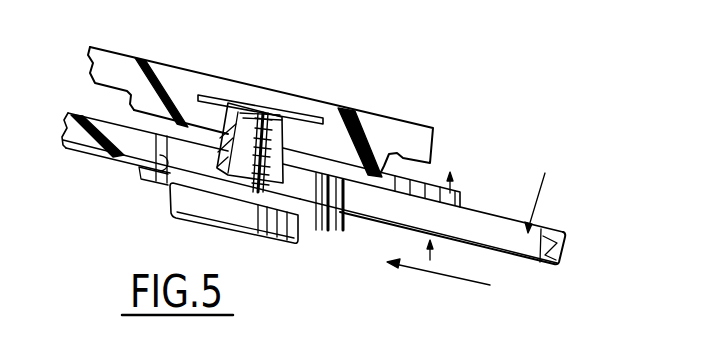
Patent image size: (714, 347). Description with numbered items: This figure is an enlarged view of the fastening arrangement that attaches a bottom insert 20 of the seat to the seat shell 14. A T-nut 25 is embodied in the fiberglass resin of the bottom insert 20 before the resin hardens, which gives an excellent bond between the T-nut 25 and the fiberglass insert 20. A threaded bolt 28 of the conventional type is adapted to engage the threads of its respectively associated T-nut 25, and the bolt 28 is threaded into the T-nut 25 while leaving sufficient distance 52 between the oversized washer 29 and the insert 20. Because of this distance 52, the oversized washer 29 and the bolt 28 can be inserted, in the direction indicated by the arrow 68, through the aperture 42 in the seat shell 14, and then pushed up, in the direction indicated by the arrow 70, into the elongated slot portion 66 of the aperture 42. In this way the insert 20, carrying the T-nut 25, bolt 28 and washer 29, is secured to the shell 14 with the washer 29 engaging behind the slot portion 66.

The seat shell 14 is at (100, 148).
The bottom insert 20 is at (370, 112).
The T-nut 25 is at (280, 117).
The threaded bolt 28 is at (275, 243).
The washer 29 is at (338, 225).
The aperture 42 is at (543, 228).
The distance 52 is at (443, 218).
The elongated slot portion 66 is at (163, 182).
The insertion direction 68 is at (543, 192).
The pushing-up direction 70 is at (447, 280).